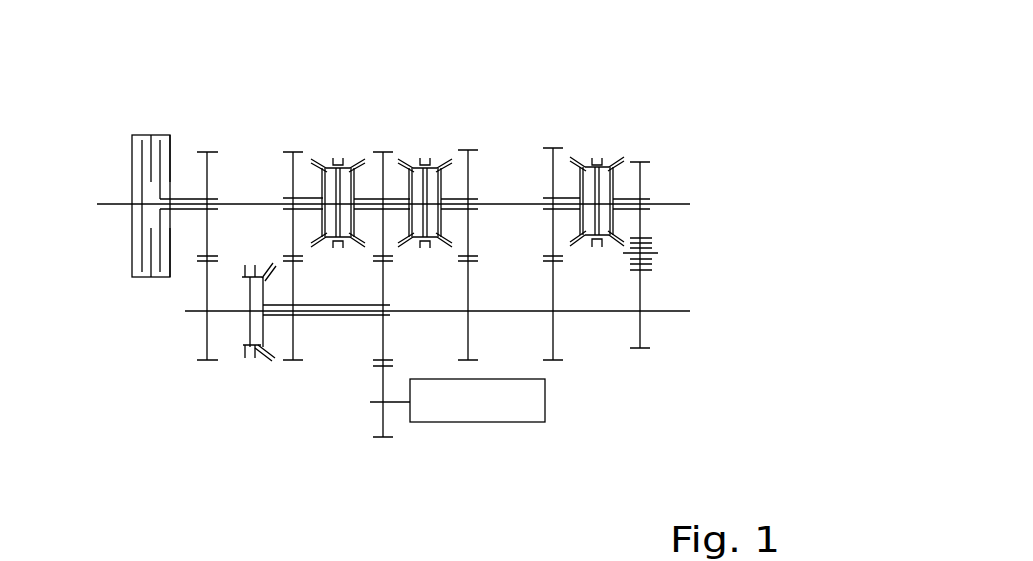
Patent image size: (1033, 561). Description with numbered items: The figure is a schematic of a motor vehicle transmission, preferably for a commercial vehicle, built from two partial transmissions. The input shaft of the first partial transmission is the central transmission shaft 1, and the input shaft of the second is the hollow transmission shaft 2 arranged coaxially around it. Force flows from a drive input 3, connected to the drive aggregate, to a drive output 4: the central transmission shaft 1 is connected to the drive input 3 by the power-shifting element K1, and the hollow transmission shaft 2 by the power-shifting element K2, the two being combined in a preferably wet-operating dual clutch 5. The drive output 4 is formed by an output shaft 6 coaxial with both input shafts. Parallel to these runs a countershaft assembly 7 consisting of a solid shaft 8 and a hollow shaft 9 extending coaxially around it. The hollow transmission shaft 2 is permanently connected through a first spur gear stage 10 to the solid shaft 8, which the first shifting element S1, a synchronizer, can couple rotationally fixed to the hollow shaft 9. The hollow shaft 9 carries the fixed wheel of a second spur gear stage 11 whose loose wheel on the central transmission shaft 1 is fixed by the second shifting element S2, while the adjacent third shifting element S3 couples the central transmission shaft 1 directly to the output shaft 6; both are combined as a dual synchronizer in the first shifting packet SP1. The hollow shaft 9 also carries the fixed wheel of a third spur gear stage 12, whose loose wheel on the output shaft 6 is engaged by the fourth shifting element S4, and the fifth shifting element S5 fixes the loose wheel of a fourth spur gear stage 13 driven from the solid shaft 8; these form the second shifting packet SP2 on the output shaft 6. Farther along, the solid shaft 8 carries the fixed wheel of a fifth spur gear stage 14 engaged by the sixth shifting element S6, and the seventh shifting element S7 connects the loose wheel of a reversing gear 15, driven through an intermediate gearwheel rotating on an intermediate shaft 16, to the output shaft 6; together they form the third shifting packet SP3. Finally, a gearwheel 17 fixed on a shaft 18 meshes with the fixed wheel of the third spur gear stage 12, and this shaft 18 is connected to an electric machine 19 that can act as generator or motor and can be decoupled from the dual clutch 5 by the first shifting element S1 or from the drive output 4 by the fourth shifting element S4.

The central transmission shaft 1 is at (257, 200).
The hollow transmission shaft 2 is at (180, 197).
The drive input 3 is at (105, 202).
The drive output 4 is at (673, 195).
The dual clutch 5 is at (143, 133).
The output shaft 6 is at (497, 207).
The countershaft assembly 7 is at (191, 397).
The solid shaft 8 is at (193, 317).
The hollow shaft 9 is at (322, 317).
The first spur gear stage 10 is at (211, 366).
The second spur gear stage 11 is at (289, 146).
The third spur gear stage 12 is at (384, 146).
The fourth spur gear stage 13 is at (474, 146).
The fifth spur gear stage 14 is at (554, 145).
The reversing gear 15 is at (645, 352).
The intermediate shaft 16 is at (655, 253).
The gearwheel 17 is at (383, 437).
The shaft 18 is at (393, 403).
The electric machine 19 is at (457, 415).
The power-shifting element K1 is at (137, 150).
The power-shifting element K2 is at (158, 133).
The first shifting element S1 is at (268, 362).
The second shifting element S2 is at (313, 150).
The third shifting element S3 is at (363, 150).
The fourth shifting element S4 is at (415, 157).
The fifth shifting element S5 is at (439, 158).
The sixth shifting element S6 is at (607, 155).
The seventh shifting element S7 is at (612, 152).
The first shifting packet SP1 is at (338, 138).
The second shifting packet SP2 is at (423, 138).
The third shifting packet SP3 is at (597, 138).